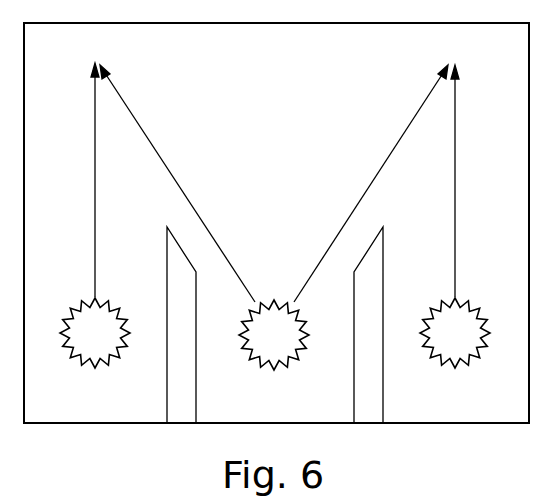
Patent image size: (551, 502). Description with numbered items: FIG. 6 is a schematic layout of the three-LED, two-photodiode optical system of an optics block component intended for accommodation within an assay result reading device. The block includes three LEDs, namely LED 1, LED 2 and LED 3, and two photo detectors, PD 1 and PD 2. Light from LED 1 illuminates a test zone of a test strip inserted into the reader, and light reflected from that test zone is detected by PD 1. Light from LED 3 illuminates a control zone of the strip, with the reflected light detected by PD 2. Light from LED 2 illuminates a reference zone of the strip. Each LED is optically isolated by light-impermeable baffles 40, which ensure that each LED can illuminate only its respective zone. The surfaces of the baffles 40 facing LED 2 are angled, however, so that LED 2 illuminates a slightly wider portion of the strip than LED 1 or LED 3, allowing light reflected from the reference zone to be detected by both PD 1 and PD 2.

The light-impermeable baffle 40 is at (196, 393).
The photo detector PD 1 is at (165, 172).
The photo detector PD 2 is at (385, 172).
The LED LED 1 is at (95, 333).
The LED LED 2 is at (274, 335).
The LED LED 3 is at (455, 333).